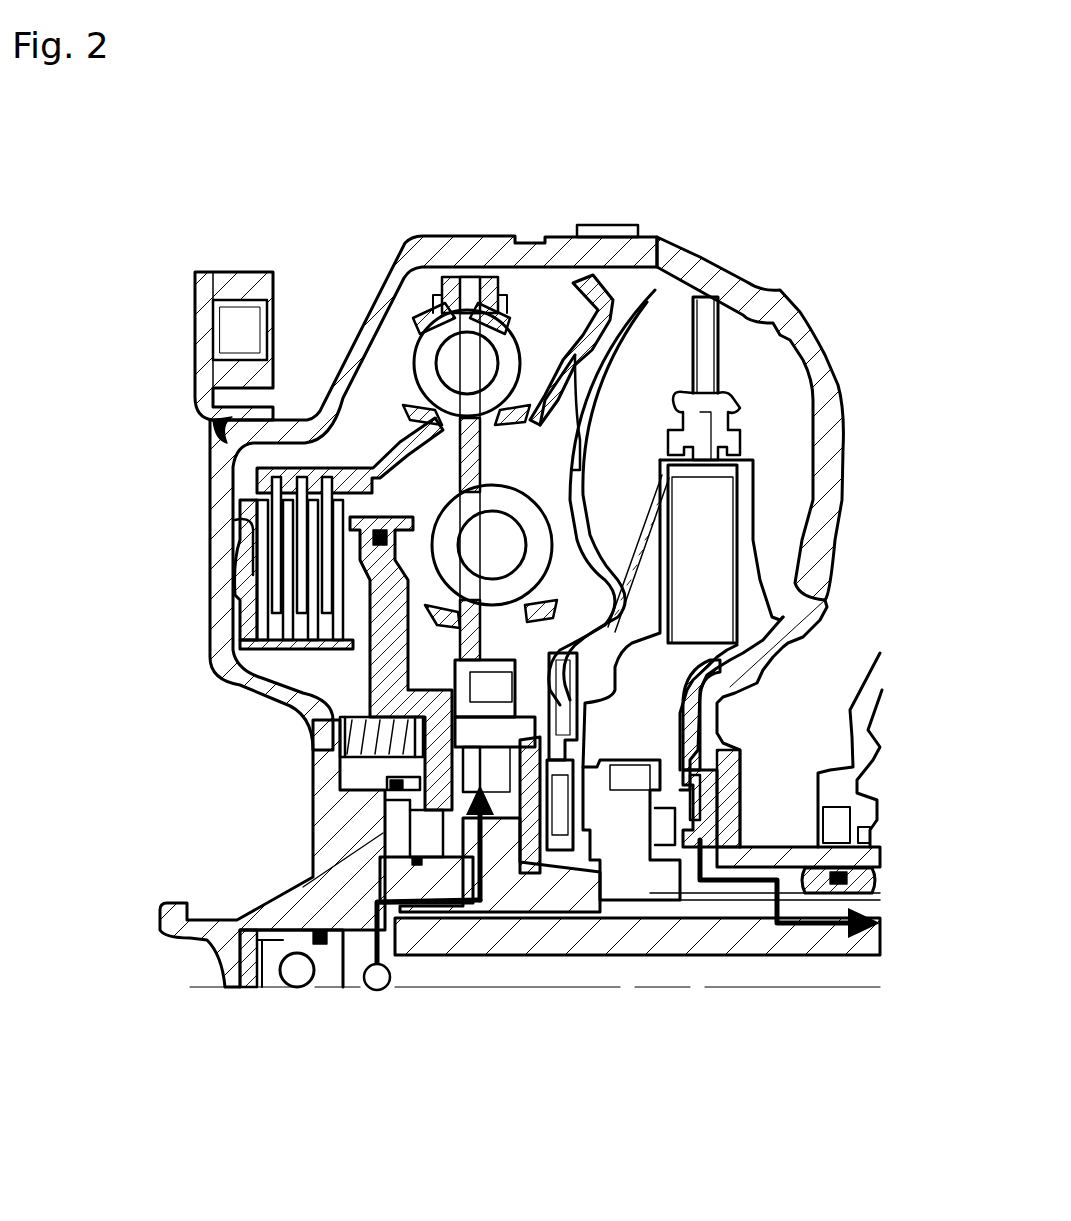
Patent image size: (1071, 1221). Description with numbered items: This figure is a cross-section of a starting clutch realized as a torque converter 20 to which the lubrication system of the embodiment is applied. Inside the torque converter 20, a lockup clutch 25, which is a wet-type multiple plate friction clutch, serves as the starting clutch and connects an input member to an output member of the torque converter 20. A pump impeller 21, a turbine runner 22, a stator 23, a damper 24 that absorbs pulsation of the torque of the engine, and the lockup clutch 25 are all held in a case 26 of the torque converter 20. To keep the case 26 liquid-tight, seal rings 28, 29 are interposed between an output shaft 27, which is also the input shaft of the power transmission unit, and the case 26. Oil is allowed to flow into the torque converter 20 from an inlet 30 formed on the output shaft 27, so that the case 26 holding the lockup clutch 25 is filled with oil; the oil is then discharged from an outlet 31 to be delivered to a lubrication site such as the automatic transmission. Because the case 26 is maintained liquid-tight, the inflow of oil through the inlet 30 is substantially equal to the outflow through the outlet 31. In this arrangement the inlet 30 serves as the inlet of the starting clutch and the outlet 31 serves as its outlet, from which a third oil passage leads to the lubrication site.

The torque converter 20 is at (673, 200).
The pump impeller 21 is at (778, 368).
The turbine runner 22 is at (663, 327).
The stator 23 is at (720, 605).
The damper 24 is at (537, 305).
The lockup clutch 25 is at (245, 483).
The case 26 is at (378, 275).
The output shaft 27 is at (710, 945).
The seal ring 28 is at (321, 950).
The seal ring 29 is at (860, 880).
The inlet 30 is at (380, 982).
The outlet 31 is at (765, 925).